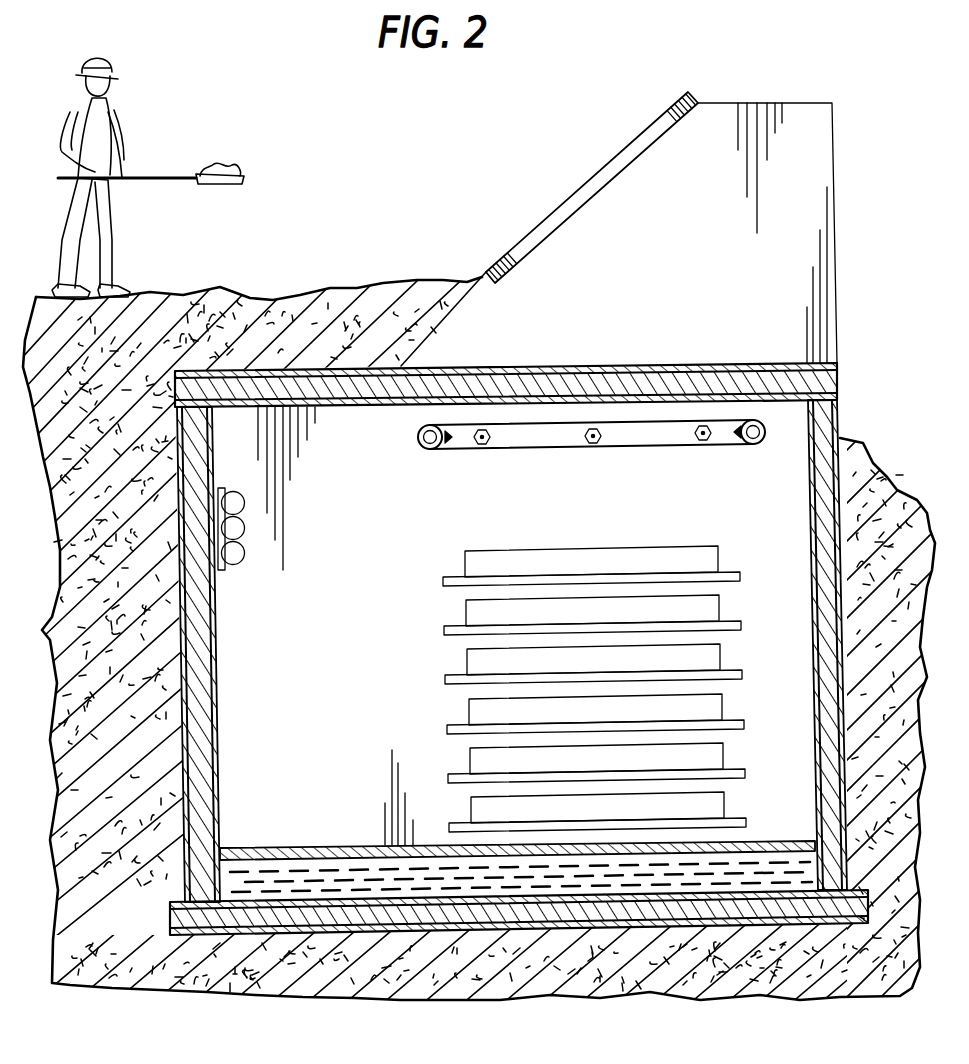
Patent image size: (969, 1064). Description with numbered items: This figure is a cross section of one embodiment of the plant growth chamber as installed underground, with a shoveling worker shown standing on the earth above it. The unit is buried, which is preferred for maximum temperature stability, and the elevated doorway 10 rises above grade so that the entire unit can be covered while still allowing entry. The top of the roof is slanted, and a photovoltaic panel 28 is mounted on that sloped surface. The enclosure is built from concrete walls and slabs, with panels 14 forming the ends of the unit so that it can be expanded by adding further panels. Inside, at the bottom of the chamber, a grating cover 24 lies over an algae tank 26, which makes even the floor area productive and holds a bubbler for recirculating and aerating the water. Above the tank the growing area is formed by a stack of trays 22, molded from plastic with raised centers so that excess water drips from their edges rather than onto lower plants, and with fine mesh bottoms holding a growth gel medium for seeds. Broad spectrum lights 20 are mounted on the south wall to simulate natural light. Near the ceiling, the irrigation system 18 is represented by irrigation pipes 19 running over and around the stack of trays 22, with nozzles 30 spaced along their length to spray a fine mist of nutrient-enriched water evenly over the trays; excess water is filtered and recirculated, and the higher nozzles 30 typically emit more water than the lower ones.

The elevated doorway 10 is at (836, 190).
The panels 14 is at (200, 702).
The irrigation system 18 is at (652, 445).
The irrigation pipes 19 is at (683, 440).
The broad spectrum lights 20 is at (244, 507).
The trays 22 is at (444, 659).
The grating cover 24 is at (267, 848).
The algae tank 26 is at (335, 880).
The photovoltaic panel 28 is at (545, 219).
The nozzles 30 is at (488, 443).